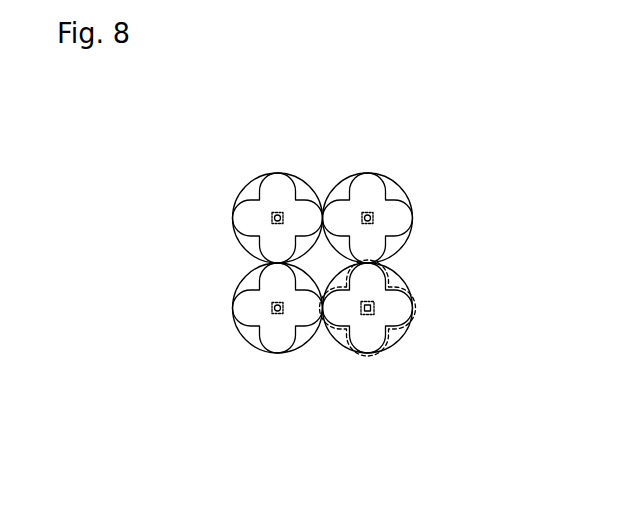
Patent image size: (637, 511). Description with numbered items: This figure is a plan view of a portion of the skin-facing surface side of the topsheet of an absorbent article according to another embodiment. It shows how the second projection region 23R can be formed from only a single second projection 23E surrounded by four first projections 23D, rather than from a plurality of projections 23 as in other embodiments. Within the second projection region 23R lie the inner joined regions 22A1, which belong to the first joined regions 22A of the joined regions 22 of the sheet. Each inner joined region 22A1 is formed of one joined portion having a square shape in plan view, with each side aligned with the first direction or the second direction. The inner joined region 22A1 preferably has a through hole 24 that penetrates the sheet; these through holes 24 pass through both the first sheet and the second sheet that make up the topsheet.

The lens array 22 is at (308, 276).
The first joined region 22A is at (308, 264).
The inner joined region 22A1 is at (250, 182).
The lens element 23 is at (332, 269).
The first projection 23D is at (392, 193).
The second projection 23E is at (242, 200).
The second projection region 23R is at (398, 330).
The through hole 24 is at (272, 219).